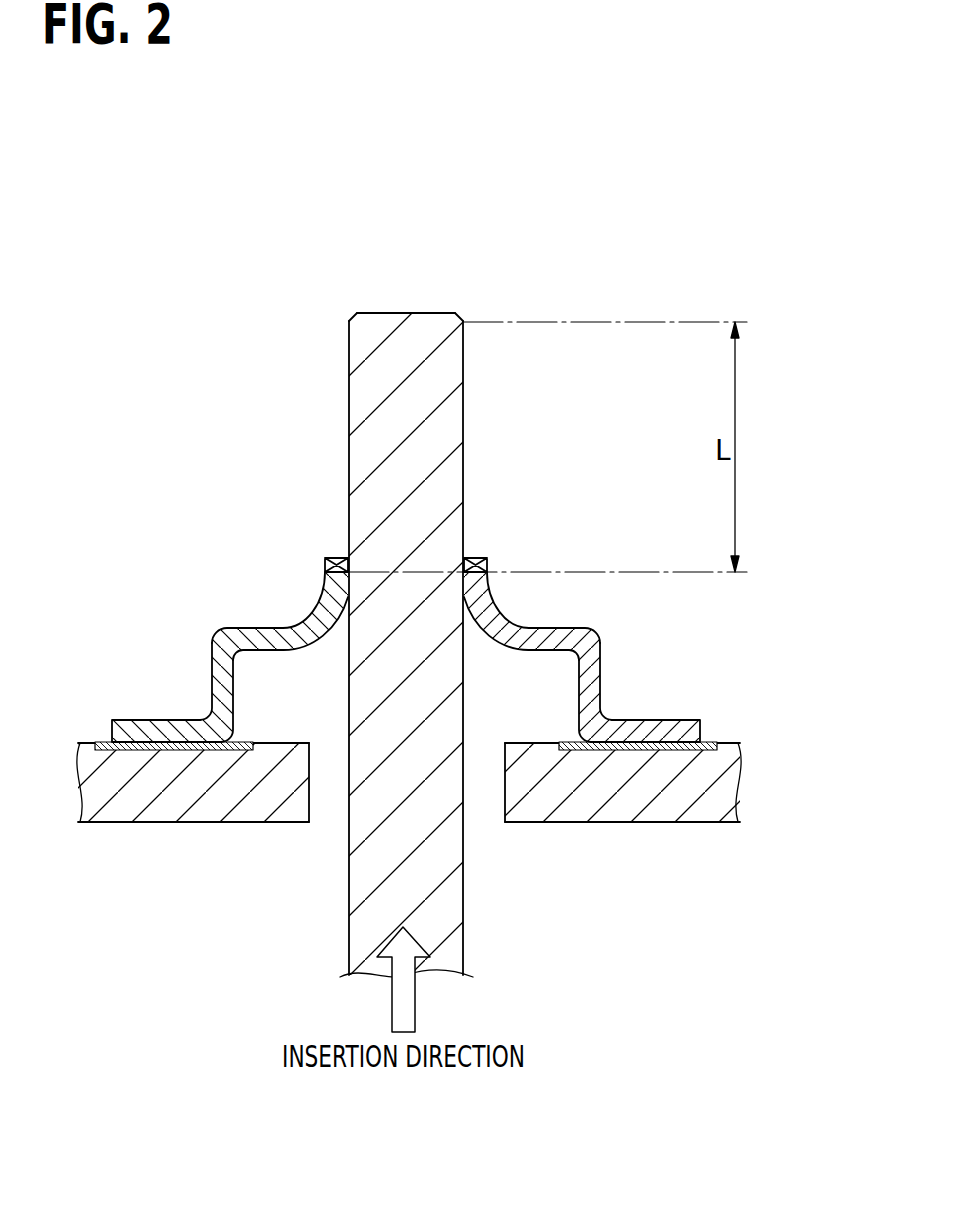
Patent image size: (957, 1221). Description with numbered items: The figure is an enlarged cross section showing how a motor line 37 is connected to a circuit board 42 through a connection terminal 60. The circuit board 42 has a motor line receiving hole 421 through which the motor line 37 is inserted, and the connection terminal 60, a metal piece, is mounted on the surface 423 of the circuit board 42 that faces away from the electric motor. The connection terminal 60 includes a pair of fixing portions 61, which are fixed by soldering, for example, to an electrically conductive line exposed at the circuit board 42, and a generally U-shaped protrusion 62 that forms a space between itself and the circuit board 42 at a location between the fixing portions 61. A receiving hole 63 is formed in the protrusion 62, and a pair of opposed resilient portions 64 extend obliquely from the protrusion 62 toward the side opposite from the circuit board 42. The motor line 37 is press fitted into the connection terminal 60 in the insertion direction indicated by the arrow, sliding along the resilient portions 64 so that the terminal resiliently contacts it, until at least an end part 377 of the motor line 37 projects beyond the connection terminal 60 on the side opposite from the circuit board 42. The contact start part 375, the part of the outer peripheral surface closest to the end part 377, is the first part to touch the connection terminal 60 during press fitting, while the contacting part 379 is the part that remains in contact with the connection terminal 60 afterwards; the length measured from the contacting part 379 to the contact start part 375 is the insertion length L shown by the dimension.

The motor line 37 is at (416, 620).
The contact start part 375 is at (349, 321).
The end part 377 is at (427, 313).
The contacting part 379 is at (325, 558).
The circuit board 42 is at (439, 807).
The motor line receiving hole 421 is at (312, 783).
The surface 423 is at (740, 744).
The connection terminal 60 is at (426, 624).
The fixing portion 61 is at (135, 725).
The protrusion 62 is at (225, 637).
The receiving hole 63 is at (490, 643).
The resilient portion 64 is at (332, 593).